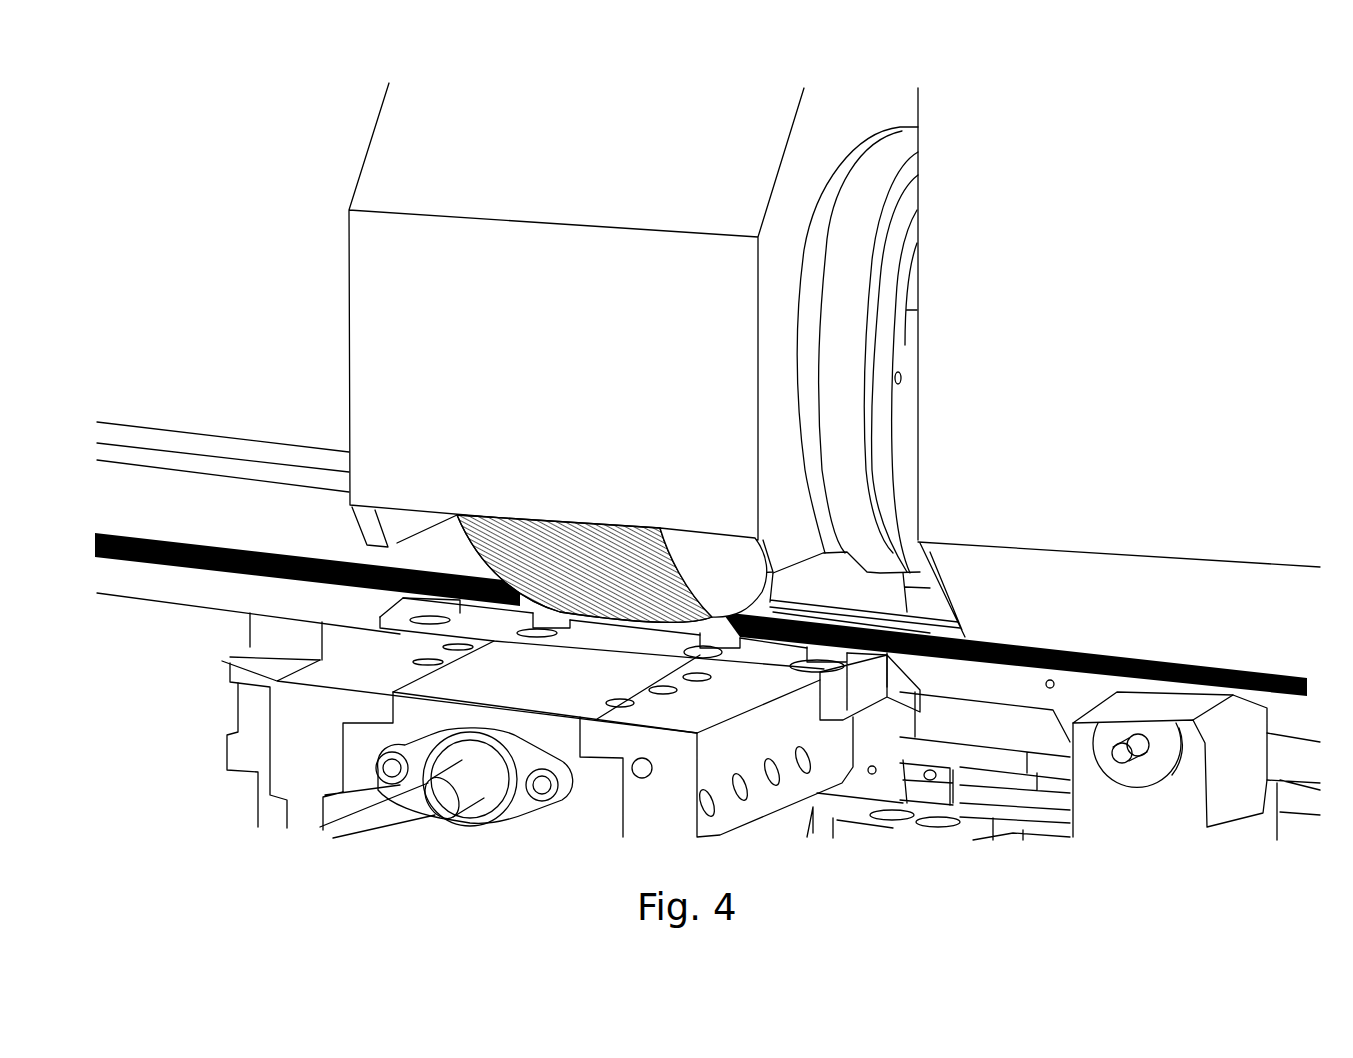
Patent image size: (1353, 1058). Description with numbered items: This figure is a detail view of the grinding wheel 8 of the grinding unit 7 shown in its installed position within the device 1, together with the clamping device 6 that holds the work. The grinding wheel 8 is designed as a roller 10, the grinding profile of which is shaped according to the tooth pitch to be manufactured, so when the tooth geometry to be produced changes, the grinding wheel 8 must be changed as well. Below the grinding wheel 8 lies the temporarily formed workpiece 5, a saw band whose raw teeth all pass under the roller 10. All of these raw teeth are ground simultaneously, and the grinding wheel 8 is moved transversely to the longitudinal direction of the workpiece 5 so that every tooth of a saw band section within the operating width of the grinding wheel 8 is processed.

The device 1 is at (165, 150).
The workpiece 5 is at (957, 677).
The clamping device 6 is at (560, 703).
The grinding unit 7 is at (580, 367).
The grinding wheel 8 is at (711, 362).
The roller 10 is at (723, 578).